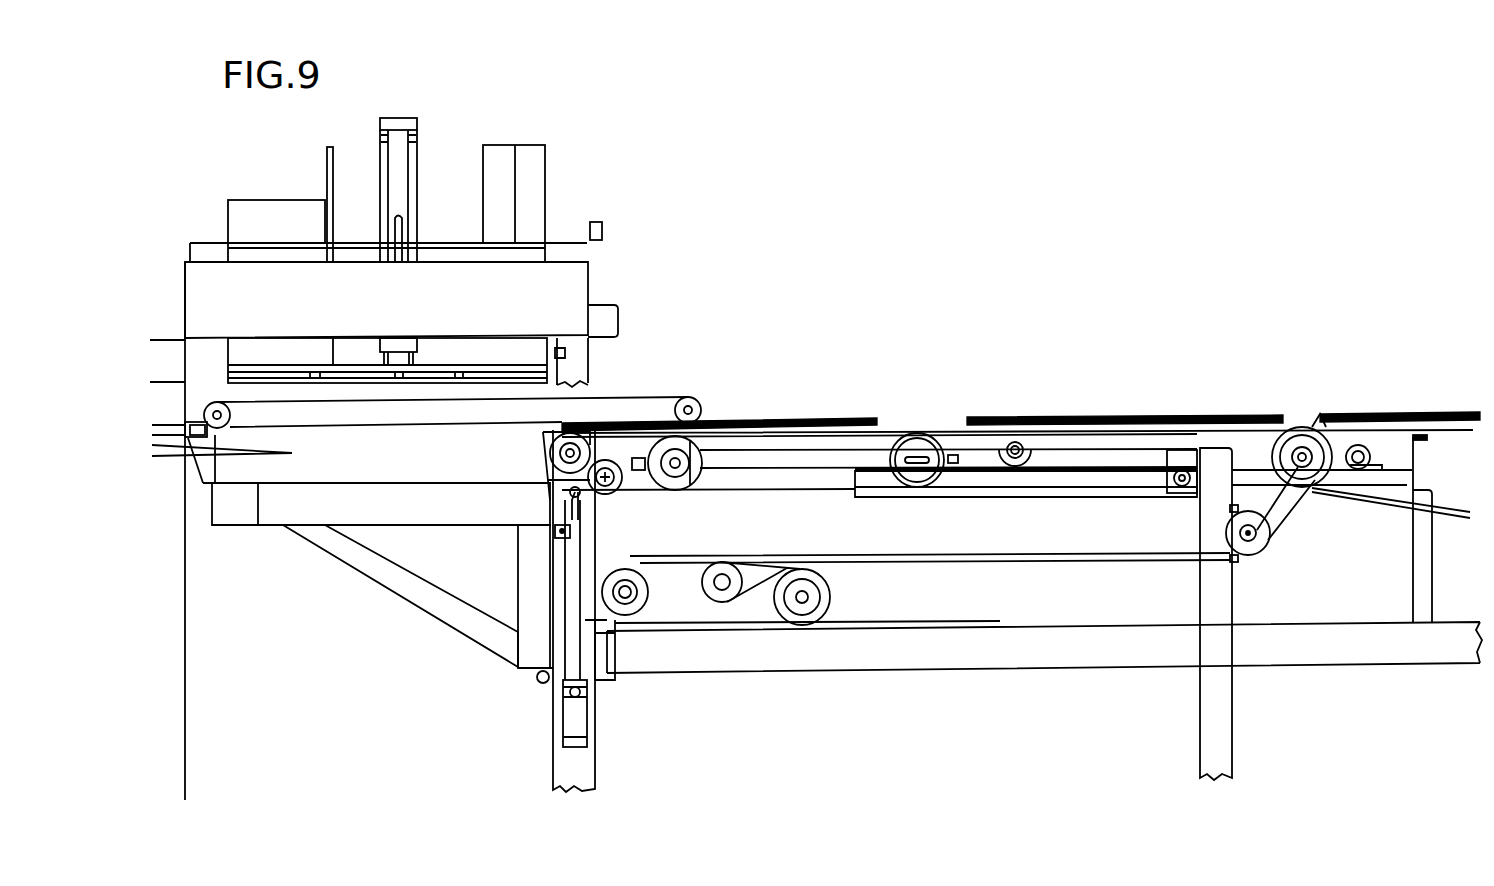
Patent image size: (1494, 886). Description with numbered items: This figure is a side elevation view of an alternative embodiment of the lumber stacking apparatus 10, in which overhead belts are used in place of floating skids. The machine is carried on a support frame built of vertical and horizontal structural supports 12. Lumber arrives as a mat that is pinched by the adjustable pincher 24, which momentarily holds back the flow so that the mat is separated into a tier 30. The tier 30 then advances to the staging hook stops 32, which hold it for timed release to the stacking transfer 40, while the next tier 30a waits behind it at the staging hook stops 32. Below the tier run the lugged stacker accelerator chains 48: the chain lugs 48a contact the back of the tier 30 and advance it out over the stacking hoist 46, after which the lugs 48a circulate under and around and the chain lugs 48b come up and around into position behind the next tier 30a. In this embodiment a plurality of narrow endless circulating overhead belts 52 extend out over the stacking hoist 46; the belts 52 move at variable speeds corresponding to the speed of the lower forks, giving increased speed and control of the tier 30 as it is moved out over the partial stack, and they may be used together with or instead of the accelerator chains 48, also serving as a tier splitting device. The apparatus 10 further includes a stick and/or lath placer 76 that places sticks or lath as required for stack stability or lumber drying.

The apparatus 10 is at (1007, 302).
The structural supports 12 is at (882, 653).
The adjustable pincher 24 is at (1318, 420).
The tier 30 is at (767, 420).
The next tier 30a is at (1110, 417).
The staging hook stops 32 is at (965, 420).
The stacking transfer 40 is at (917, 420).
The stacking hoist 46 is at (390, 505).
The stacker accelerator chains 48 is at (732, 492).
The chain lugs 48a is at (945, 497).
The chain lugs 48b is at (635, 470).
The overhead belts 52 is at (607, 400).
The stick and/or lath placer 76 is at (510, 295).